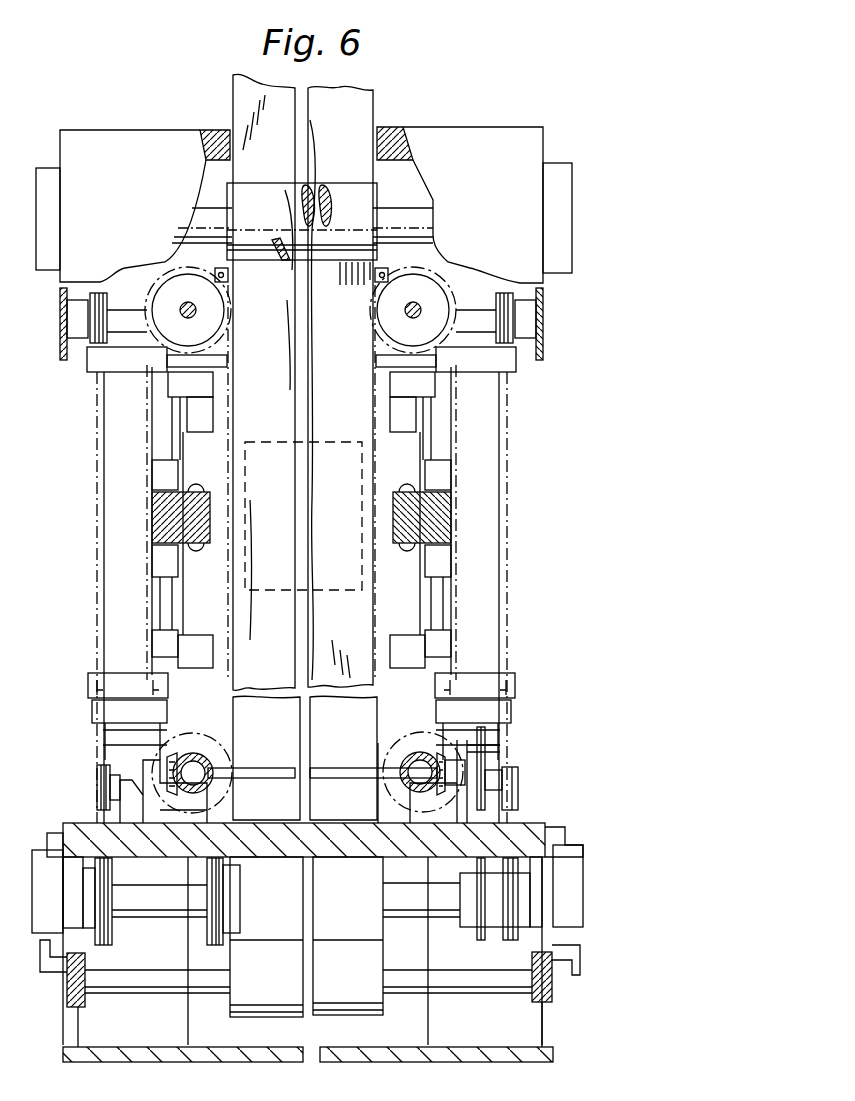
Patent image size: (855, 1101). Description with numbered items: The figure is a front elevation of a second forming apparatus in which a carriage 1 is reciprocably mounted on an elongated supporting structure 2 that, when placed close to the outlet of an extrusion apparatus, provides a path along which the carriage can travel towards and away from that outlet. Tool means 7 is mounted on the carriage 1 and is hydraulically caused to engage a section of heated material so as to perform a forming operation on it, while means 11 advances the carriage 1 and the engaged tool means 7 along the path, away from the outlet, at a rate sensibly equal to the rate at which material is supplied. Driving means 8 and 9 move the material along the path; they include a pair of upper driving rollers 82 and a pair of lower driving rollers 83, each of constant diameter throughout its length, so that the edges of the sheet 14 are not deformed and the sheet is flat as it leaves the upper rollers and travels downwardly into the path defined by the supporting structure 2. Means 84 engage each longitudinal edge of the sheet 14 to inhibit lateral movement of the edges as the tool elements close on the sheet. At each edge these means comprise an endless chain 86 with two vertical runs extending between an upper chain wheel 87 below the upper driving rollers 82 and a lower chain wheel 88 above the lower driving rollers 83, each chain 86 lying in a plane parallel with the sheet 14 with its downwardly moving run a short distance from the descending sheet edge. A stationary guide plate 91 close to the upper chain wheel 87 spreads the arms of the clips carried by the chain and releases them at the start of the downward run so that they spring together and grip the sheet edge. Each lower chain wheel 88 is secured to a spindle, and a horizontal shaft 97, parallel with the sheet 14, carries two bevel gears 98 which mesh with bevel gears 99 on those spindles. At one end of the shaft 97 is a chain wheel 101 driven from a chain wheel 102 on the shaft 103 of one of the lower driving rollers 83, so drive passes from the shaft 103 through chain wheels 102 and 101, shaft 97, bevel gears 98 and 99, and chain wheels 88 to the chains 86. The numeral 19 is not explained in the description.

The bearing block 19 is at (222, 130).
The upper driving rollers 82 is at (385, 192).
The driving means 8 is at (357, 226).
The upper chain wheel 87 is at (432, 282).
The edge engaging means 84 is at (232, 345).
The stationary guide plate 91 is at (228, 277).
The sheet 14 is at (285, 412).
The tool means 7 is at (333, 442).
The carriage 1 is at (210, 449).
The endless chain 86 is at (152, 412).
The carriage advancing means 11 is at (483, 540).
The elongated supporting structure 2 is at (112, 612).
The lower chain wheel 88 is at (400, 745).
The bevel gear 99 is at (418, 735).
The bevel gear 98 is at (443, 740).
The chain wheel 101 is at (487, 760).
The horizontal shaft 97 is at (312, 780).
The lower driving rollers 83 is at (235, 918).
The shaft 103 is at (418, 900).
The chain wheel 102 is at (478, 918).
The driving means 9 is at (352, 979).